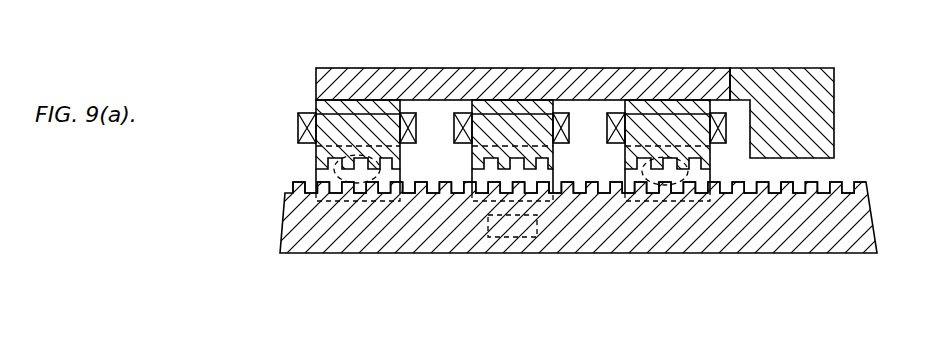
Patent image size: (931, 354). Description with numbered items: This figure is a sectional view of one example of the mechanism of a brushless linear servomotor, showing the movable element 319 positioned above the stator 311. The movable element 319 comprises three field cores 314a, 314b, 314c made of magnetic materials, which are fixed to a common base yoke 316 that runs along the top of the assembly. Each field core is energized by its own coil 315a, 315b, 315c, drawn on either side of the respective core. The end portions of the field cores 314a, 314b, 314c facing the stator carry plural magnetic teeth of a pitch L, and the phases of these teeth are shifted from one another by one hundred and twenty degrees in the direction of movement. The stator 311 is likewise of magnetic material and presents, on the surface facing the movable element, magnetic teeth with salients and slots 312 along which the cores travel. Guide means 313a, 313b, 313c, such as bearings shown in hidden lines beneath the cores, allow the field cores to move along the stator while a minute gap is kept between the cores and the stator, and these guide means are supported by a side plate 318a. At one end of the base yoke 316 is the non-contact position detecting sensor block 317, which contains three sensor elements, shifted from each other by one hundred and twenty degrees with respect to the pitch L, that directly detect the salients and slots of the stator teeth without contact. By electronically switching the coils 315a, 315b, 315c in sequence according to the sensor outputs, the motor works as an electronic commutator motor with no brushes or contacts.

The stator 311 is at (700, 236).
The grooves of substrate 312 is at (842, 192).
The guide means 313a is at (313, 201).
The guide means 313b is at (488, 237).
The guide means 313c is at (641, 203).
The field core 314a is at (316, 160).
The field core 314b is at (453, 186).
The field core 314c is at (623, 168).
The coil 315a is at (316, 110).
The coil 315b is at (456, 113).
The coil 315c is at (608, 113).
The base yoke 316 is at (652, 108).
The non-contact position detecting sensor block 317 is at (780, 90).
The side plate 318a is at (427, 112).
The movable element 319 is at (722, 67).